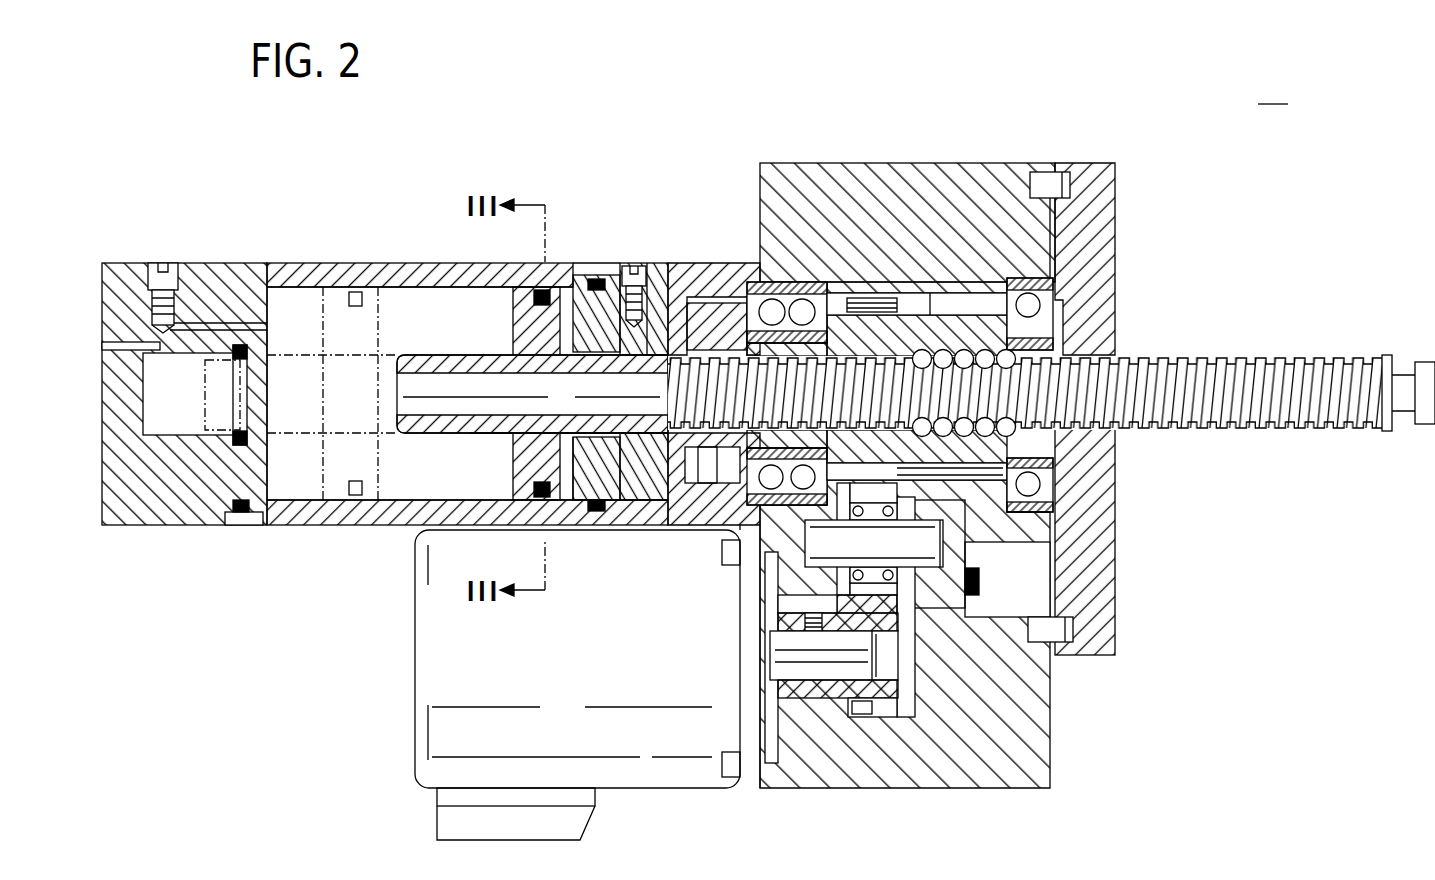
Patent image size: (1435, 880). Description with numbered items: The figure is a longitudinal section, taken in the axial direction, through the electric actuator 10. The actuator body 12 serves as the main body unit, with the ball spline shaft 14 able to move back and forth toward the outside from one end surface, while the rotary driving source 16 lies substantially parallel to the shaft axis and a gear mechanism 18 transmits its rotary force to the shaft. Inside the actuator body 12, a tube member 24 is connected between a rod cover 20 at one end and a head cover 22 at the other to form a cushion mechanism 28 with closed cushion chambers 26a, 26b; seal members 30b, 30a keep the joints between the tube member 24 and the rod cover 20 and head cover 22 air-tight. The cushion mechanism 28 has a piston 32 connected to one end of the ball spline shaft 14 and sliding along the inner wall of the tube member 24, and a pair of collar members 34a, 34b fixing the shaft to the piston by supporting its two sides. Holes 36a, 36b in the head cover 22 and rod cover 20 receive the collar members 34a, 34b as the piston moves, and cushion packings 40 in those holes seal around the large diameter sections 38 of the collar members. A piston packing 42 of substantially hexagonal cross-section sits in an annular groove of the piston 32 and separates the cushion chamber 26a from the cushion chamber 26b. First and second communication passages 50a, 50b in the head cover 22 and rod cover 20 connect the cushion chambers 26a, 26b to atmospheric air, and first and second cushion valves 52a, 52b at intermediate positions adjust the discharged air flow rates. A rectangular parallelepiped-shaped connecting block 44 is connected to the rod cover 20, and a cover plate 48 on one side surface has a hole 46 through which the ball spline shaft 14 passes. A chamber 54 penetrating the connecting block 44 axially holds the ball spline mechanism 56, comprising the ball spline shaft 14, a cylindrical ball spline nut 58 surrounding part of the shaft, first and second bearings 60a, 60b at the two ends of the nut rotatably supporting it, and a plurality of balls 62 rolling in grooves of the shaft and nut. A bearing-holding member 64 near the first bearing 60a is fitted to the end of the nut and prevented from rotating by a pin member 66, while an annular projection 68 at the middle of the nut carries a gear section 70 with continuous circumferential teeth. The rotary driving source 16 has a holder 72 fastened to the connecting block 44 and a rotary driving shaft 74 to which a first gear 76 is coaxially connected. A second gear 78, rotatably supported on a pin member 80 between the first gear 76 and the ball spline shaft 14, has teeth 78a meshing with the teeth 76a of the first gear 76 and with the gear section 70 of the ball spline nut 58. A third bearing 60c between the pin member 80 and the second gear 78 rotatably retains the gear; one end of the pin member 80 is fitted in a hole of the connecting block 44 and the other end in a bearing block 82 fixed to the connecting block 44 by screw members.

The electric actuator 10 is at (1273, 92).
The actuator body 12 is at (358, 534).
The ball spline shaft 14 is at (1228, 398).
The rotary driving source 16 is at (404, 752).
The gear mechanism 18 is at (975, 583).
The rod cover 20 is at (702, 263).
The head cover 22 is at (128, 492).
The tube member 24 is at (293, 513).
The cushion chamber 26a is at (413, 318).
The cushion chamber 26b is at (598, 262).
The cushion mechanism 28 is at (275, 335).
The seal member 30a is at (243, 448).
The seal member 30b is at (598, 522).
The piston 32 is at (518, 326).
The collar member 34a is at (458, 436).
The collar member 34b is at (640, 440).
The hole 36a is at (168, 437).
The hole 36b is at (657, 447).
The large diameter section 38 is at (484, 436).
The cushion packing 40 is at (243, 506).
The piston packing 42 is at (563, 522).
The connecting block 44 is at (947, 757).
The hole 46 is at (1117, 334).
The cover plate 48 is at (1105, 488).
The first communication passage 50a is at (120, 336).
The second communication passage 50b is at (657, 263).
The first cushion valve 52a is at (168, 278).
The second cushion valve 52b is at (633, 264).
The chamber 54 is at (958, 304).
The ball spline mechanism 56 is at (977, 340).
The ball spline nut 58 is at (930, 330).
The first bearing 60a is at (790, 282).
The second bearing 60b is at (1042, 292).
The third bearing 60c is at (886, 580).
The balls 62 is at (1008, 438).
The bearing-holding member 64 is at (717, 320).
The pin member 66 is at (717, 473).
The annular projection 68 is at (1010, 505).
The gear section 70 is at (863, 293).
The holder 72 is at (647, 740).
The rotary driving shaft 74 is at (807, 660).
The first gear 76 is at (848, 522).
The teeth 76a is at (898, 612).
The second gear 78 is at (967, 548).
The teeth 78a is at (935, 592).
The pin member 80 is at (972, 560).
The bearing block 82 is at (1000, 607).